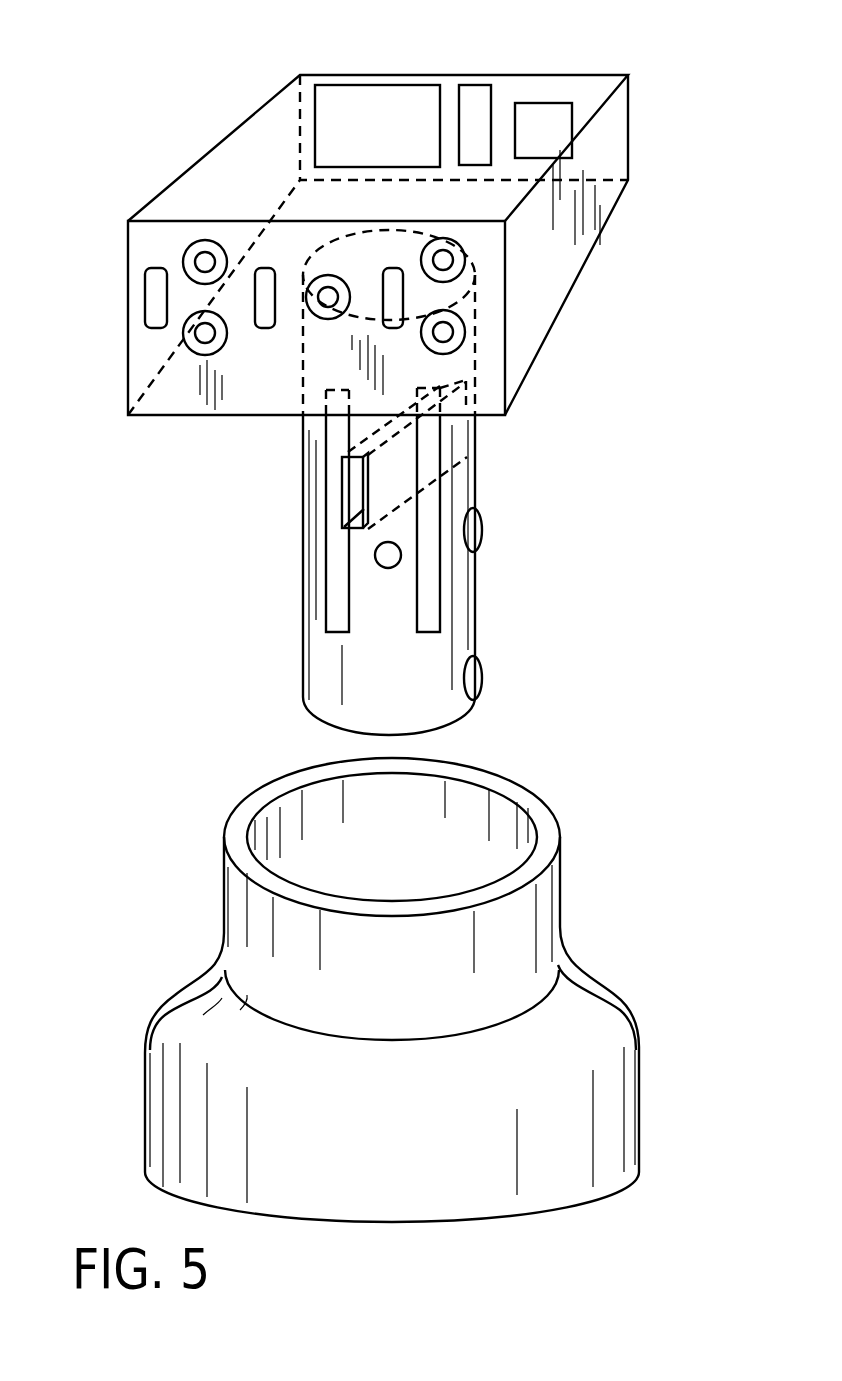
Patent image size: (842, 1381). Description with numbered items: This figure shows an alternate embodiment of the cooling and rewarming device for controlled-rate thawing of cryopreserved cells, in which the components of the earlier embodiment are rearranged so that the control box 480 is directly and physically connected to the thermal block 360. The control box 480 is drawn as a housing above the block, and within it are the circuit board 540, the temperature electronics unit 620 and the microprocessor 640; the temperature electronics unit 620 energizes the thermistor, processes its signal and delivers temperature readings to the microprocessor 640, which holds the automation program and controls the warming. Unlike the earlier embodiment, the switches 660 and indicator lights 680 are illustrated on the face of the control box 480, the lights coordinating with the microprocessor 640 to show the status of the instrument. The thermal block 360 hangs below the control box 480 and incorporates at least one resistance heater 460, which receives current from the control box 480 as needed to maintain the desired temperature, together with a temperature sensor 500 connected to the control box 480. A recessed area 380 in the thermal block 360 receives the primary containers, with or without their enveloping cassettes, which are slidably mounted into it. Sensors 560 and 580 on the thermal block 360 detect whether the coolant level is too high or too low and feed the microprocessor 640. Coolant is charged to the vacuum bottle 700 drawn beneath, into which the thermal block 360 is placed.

The control box 480 is at (190, 125).
The circuit board 540 is at (357, 85).
The temperature electronics unit 620 is at (478, 85).
The microprocessor 640 is at (553, 107).
The switches 660 is at (145, 300).
The indicator lights 680 is at (458, 256).
The thermal block 360 is at (288, 693).
The resistance heater 460 is at (332, 583).
The recessed area 380 is at (354, 490).
The temperature sensor 500 is at (386, 568).
The sensor 560 is at (487, 520).
The sensor 580 is at (487, 680).
The vacuum bottle 700 is at (580, 823).